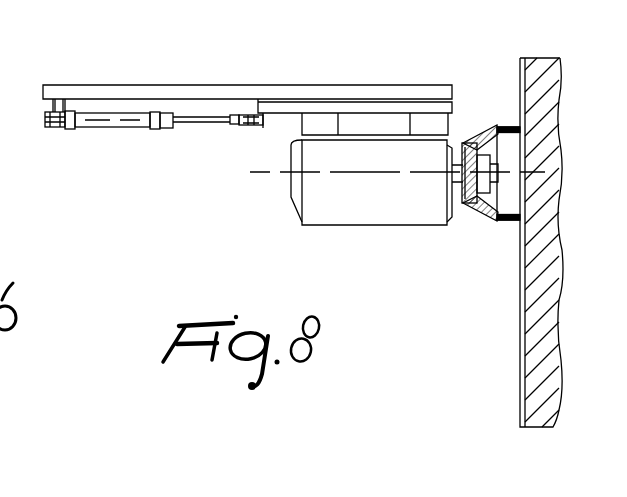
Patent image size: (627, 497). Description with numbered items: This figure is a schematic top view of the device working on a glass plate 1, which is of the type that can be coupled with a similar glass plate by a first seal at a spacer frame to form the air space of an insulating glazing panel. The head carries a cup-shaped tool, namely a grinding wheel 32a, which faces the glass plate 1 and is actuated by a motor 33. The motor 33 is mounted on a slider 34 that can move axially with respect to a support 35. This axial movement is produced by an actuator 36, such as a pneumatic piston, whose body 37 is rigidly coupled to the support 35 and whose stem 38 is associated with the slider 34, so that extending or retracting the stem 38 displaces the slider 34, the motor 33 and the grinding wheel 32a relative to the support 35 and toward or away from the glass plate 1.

The glass plate 1 is at (475, 353).
The grinding wheel 32a is at (461, 224).
The motor 33 is at (325, 203).
The slider 34 is at (295, 108).
The support 35 is at (132, 88).
The actuator 36 is at (145, 114).
The body 37 is at (88, 118).
The stem 38 is at (200, 117).